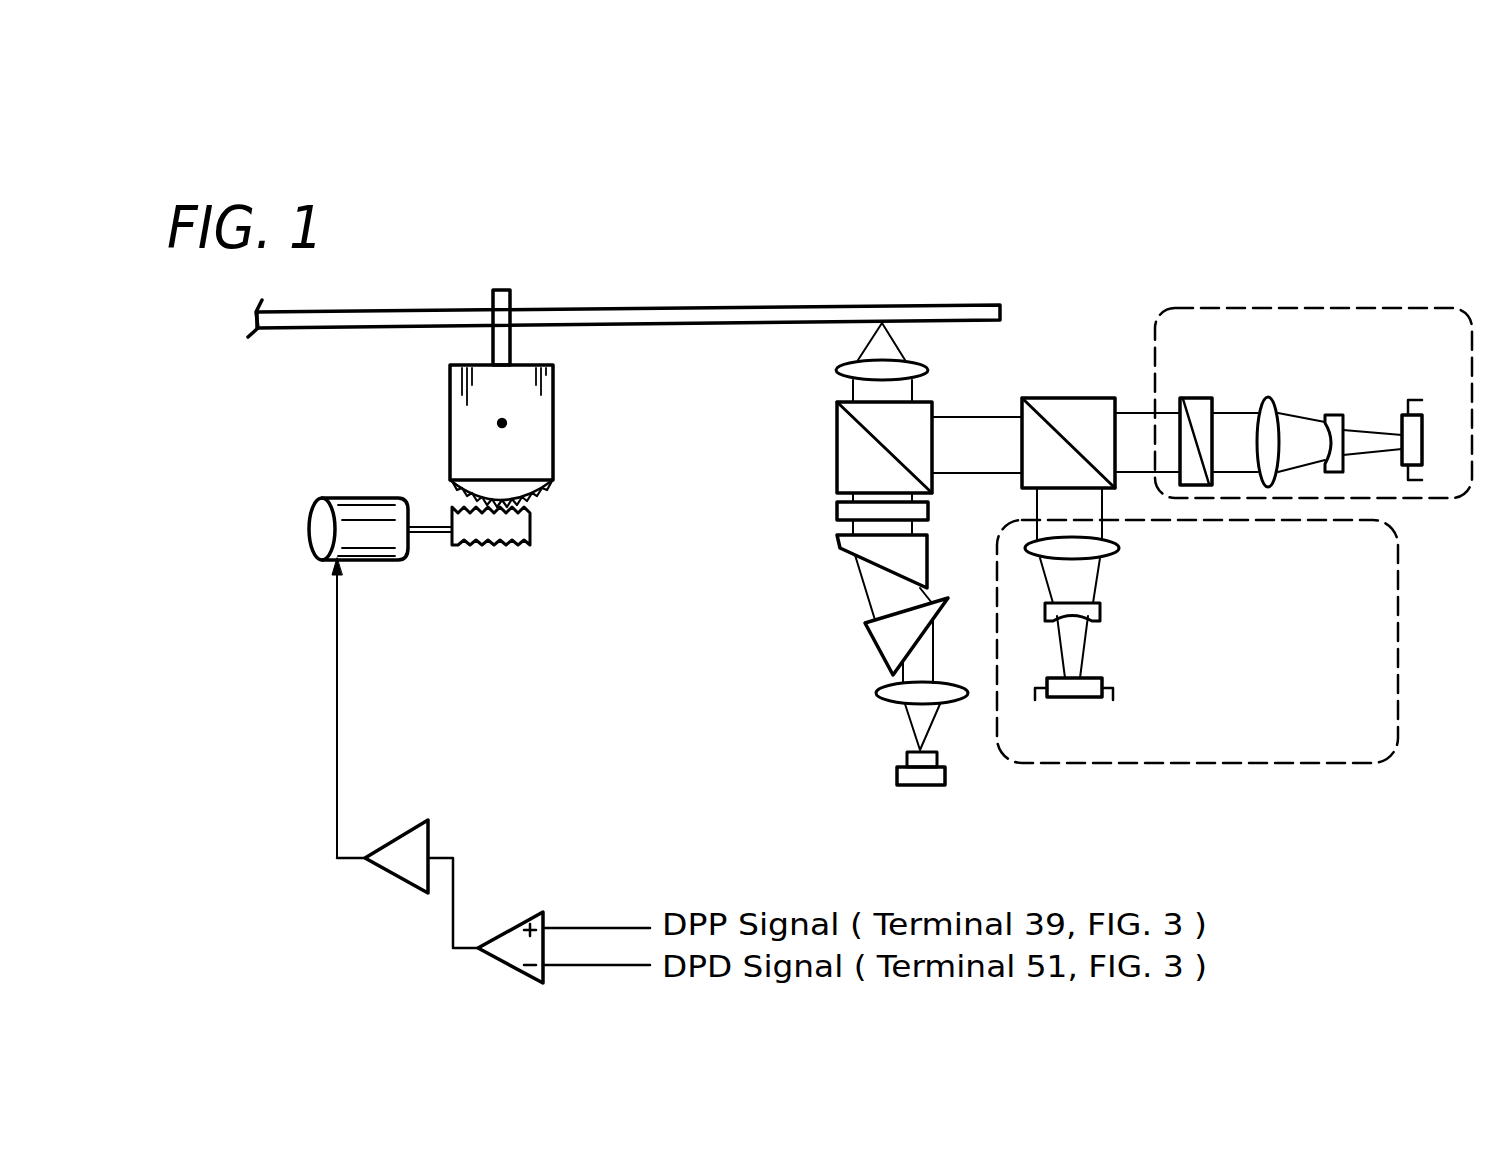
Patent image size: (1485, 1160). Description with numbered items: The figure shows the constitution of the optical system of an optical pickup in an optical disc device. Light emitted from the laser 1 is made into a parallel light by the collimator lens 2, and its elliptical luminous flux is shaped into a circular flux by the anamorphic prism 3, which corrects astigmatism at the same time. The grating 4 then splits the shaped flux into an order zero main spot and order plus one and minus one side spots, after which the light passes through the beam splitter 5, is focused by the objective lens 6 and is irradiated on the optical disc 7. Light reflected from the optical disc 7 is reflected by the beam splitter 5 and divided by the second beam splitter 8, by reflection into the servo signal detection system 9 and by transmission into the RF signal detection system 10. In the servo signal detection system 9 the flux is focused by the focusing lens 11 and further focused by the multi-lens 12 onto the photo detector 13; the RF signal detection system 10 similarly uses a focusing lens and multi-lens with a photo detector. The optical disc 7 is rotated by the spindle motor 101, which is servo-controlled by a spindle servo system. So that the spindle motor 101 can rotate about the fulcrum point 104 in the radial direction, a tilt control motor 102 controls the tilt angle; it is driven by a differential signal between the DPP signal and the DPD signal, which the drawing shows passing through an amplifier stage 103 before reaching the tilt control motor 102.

The laser 1 is at (945, 773).
The collimator lens 2 is at (878, 693).
The anamorphic prism 3 is at (830, 568).
The grating 4 is at (837, 512).
The beam splitter (1) 5 is at (837, 465).
The objective lens 6 is at (838, 368).
The optical disc 7 is at (830, 303).
The beam splitter (2) 8 is at (1078, 398).
The servo signal detection system 9 is at (1197, 641).
The RF signal detection system 10 is at (1293, 403).
The focusing lens 11 is at (1118, 550).
The multi-lens 12 is at (1100, 609).
The photo detector 13 is at (1102, 681).
The spindle motor 101 is at (553, 455).
The tilt control motor 102 is at (375, 552).
The amplifier 103 is at (400, 830).
The fulcrum point 104 is at (504, 421).